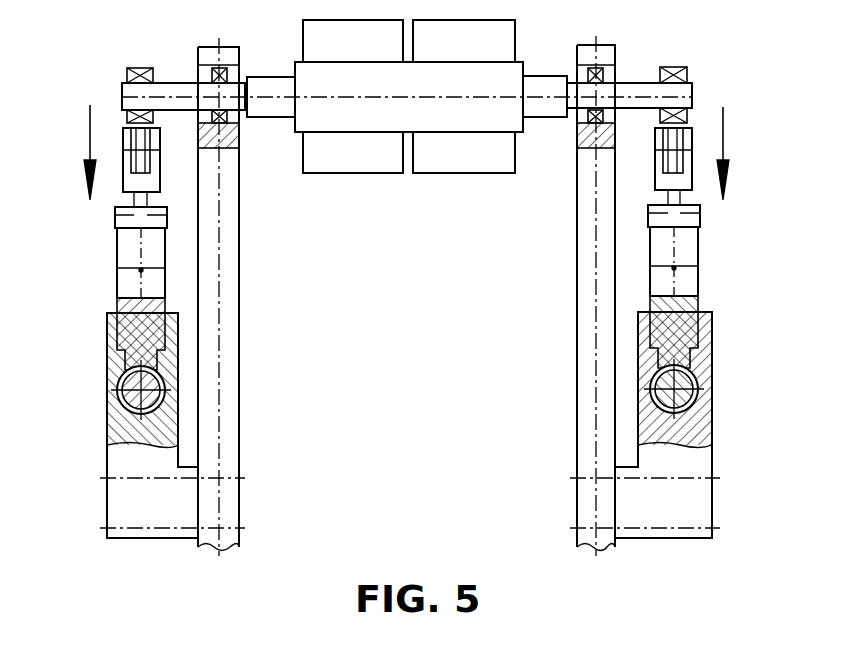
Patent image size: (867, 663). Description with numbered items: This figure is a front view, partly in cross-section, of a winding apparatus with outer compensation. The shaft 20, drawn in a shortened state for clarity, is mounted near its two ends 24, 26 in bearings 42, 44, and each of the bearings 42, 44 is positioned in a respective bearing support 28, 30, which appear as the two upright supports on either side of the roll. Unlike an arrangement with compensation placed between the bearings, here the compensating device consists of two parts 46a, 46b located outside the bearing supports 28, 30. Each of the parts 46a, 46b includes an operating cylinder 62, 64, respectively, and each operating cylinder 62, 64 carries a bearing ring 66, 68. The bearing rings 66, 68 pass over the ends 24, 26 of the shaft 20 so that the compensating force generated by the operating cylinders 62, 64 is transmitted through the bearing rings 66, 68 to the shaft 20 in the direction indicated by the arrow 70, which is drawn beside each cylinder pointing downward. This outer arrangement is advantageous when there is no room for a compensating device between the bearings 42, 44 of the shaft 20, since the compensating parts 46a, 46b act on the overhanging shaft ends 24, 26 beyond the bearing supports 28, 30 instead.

The shaft 20 is at (273, 76).
The end of the shaft 24 is at (122, 95).
The end of the shaft 26 is at (692, 86).
The bearing support 28 is at (240, 298).
The bearing support 30 is at (575, 288).
The bearing 42 is at (212, 78).
The bearing 44 is at (603, 76).
The part of the compensating device 46a is at (112, 248).
The part of the compensating device 46b is at (702, 245).
The operating cylinder 62 is at (115, 218).
The operating cylinder 64 is at (700, 216).
The bearing ring 66 is at (140, 68).
The bearing ring 68 is at (680, 67).
The arrow 70 is at (90, 128).